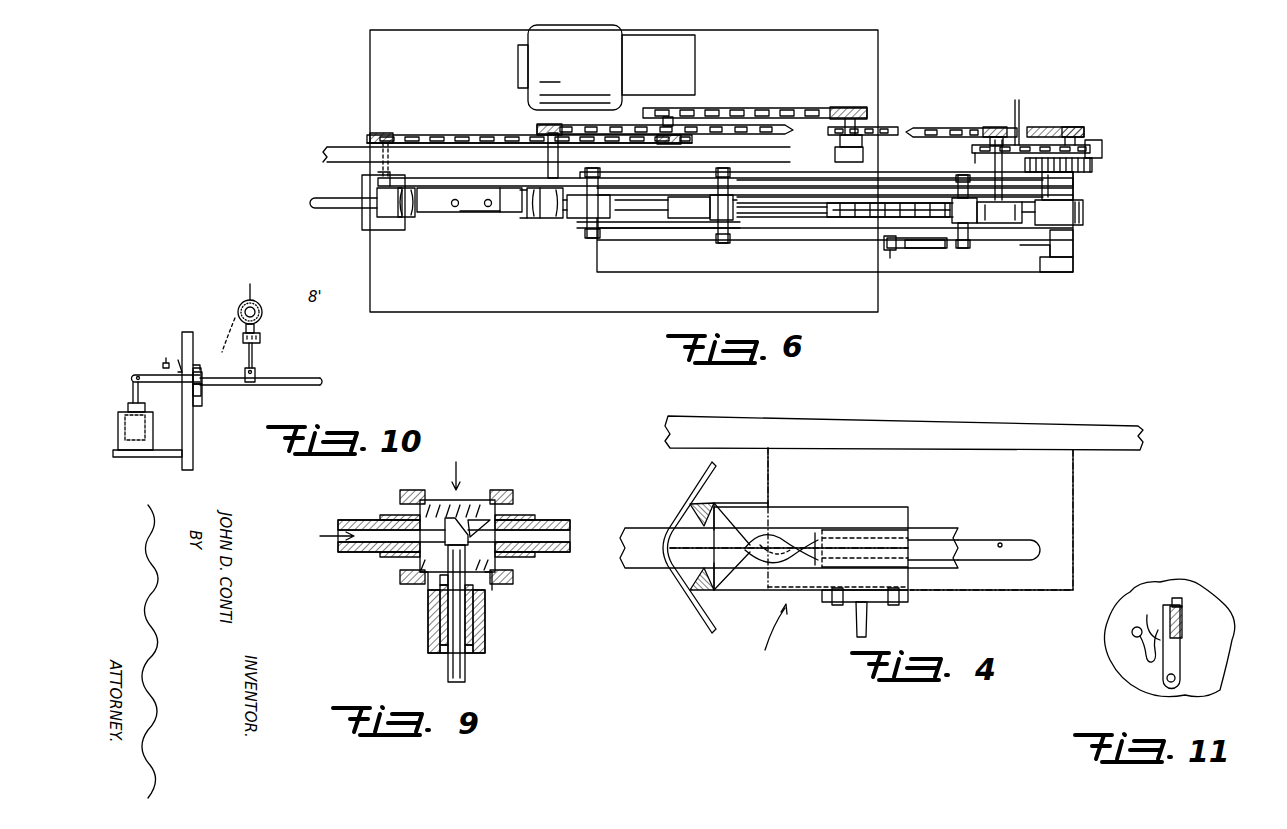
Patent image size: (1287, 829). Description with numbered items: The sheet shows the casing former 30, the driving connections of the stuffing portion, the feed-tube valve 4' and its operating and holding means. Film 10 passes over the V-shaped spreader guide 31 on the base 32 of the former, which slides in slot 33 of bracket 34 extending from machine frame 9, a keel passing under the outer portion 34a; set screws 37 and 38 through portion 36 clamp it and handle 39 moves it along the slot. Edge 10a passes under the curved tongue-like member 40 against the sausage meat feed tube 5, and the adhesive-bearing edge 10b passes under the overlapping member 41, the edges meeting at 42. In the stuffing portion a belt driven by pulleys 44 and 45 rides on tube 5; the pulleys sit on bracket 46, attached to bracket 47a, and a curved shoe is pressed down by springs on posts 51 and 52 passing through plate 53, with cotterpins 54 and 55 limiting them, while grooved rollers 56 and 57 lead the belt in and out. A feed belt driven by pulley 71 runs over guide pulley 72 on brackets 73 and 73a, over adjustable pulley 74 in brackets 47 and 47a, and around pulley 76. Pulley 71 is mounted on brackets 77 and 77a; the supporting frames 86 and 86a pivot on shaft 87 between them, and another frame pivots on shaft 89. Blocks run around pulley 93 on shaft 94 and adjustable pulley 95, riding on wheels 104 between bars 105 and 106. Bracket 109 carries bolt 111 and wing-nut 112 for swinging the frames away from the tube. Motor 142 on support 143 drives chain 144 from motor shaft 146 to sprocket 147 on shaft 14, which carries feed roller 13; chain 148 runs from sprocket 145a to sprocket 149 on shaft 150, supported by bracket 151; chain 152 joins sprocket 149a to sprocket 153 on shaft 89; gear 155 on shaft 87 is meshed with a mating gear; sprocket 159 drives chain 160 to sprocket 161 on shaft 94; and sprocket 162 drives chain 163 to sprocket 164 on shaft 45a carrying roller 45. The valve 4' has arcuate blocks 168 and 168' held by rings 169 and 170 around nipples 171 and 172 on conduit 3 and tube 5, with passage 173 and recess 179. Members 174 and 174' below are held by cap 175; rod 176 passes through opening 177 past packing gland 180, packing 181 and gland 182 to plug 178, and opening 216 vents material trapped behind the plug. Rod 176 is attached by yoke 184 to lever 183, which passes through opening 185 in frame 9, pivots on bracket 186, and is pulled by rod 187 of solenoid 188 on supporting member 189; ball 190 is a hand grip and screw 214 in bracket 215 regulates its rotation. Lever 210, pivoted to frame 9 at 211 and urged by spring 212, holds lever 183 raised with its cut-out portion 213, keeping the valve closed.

In FIG. 6, the support 143 is at (383, 76).
In FIG. 6, the motor 142 is at (585, 76).
In FIG. 6, the chain 144 is at (416, 134).
In FIG. 6, the sprocket 147 is at (386, 132).
In FIG. 6, the machine frame 9 is at (455, 147).
In FIG. 10, the machine frame 9 is at (193, 440).
In FIG. 4, the machine frame 9 is at (928, 442).
In FIG. 11, the machine frame 9 is at (1220, 622).
In FIG. 6, the chain 163 is at (748, 130).
In FIG. 6, the sprocket 164 is at (540, 125).
In FIG. 6, the sprocket 145a is at (690, 128).
In FIG. 6, the motor shaft 146 is at (668, 115).
In FIG. 6, the chain 148 is at (757, 108).
In FIG. 6, the sprocket 149 is at (850, 106).
In FIG. 6, the sprocket 149a is at (835, 127).
In FIG. 6, the chain 152 is at (880, 132).
In FIG. 6, the shaft 150 is at (838, 143).
In FIG. 6, the bracket 151 is at (864, 155).
In FIG. 6, the sprocket 162 is at (990, 127).
In FIG. 6, the chain 160 is at (1017, 140).
In FIG. 6, the sprocket 153 is at (1074, 127).
In FIG. 6, the shaft 89 is at (1075, 145).
In FIG. 6, the sprocket 159 is at (1102, 150).
In FIG. 6, the gear 155 is at (1093, 165).
In FIG. 6, the shaft 94 is at (1000, 158).
In FIG. 6, the sprocket 161 is at (975, 153).
In FIG. 6, the shaft 14 is at (365, 168).
In FIG. 6, the bracket 46 is at (425, 182).
In FIG. 6, the bracket 47a is at (660, 186).
In FIG. 6, the supporting frame 86a is at (745, 190).
In FIG. 6, the supporting frame 86 is at (785, 256).
In FIG. 6, the bar 106 is at (772, 193).
In FIG. 6, the bracket 73a is at (955, 185).
In FIG. 6, the sausage meat feed tube 5 is at (338, 205).
In FIG. 9, the sausage meat feed tube 5 is at (552, 552).
In FIG. 4, the sausage meat feed tube 5 is at (632, 570).
In FIG. 6, the grooved roller 56 is at (372, 216).
In FIG. 6, the sheet material feed roller 13 is at (383, 232).
In FIG. 6, the pulley 44 is at (405, 220).
In FIG. 6, the plate 53 is at (430, 205).
In FIG. 6, the post 51 is at (457, 207).
In FIG. 6, the post 52 is at (491, 207).
In FIG. 6, the cotterpin 54 is at (465, 212).
In FIG. 6, the cotterpin 55 is at (505, 214).
In FIG. 6, the pulley 45 is at (545, 222).
In FIG. 6, the shaft 45a is at (545, 165).
In FIG. 6, the grooved roller 57 is at (523, 222).
In FIG. 6, the pulley 76 is at (575, 226).
In FIG. 6, the pulley 95 is at (675, 210).
In FIG. 6, the bracket 47 is at (680, 240).
In FIG. 6, the pulley 74 is at (728, 230).
In FIG. 6, the bar 105 is at (778, 222).
In FIG. 6, the wheels 104 is at (838, 220).
In FIG. 6, the bolt 111 is at (880, 238).
In FIG. 6, the wing-nut 112 is at (890, 258).
In FIG. 6, the supporting bracket 109 is at (912, 250).
In FIG. 6, the guide pulley 72 is at (965, 220).
In FIG. 6, the bracket 73 is at (958, 248).
In FIG. 6, the pulley 93 is at (1000, 224).
In FIG. 6, the pulley 71 is at (1084, 208).
In FIG. 6, the bracket 77a is at (1075, 178).
In FIG. 6, the bracket 77 is at (1074, 248).
In FIG. 6, the shaft 87 is at (1060, 260).
In FIG. 10, the conduit 3 is at (248, 298).
In FIG. 9, the conduit 3 is at (345, 552).
In FIG. 10, the arcuate block 168' is at (278, 305).
In FIG. 10, the arcuate member 174' is at (279, 323).
In FIG. 10, the cap 175 is at (261, 338).
In FIG. 9, the cap 175 is at (488, 634).
In FIG. 10, the rod 176 is at (253, 358).
In FIG. 9, the rod 176 is at (448, 662).
In FIG. 10, the yoke 184 is at (255, 382).
In FIG. 10, the lever 183 is at (305, 375).
In FIG. 11, the lever 183 is at (1177, 598).
In FIG. 10, the ball 190 is at (325, 383).
In FIG. 10, the bracket 186 is at (170, 385).
In FIG. 10, the rod 187 is at (135, 383).
In FIG. 10, the solenoid 188 is at (128, 452).
In FIG. 10, the supporting member 189 is at (164, 458).
In FIG. 10, the screw 214 is at (163, 362).
In FIG. 10, the bracket 215 is at (180, 360).
In FIG. 10, the arcuate block 168 is at (208, 353).
In FIG. 9, the arcuate block 168 is at (463, 513).
In FIG. 10, the arcuate member 174 is at (229, 343).
In FIG. 9, the arcuate member 174 is at (420, 615).
In FIG. 10, the opening 185 is at (192, 400).
In FIG. 11, the opening 185 is at (1183, 608).
In FIG. 10, the lever 210 is at (202, 382).
In FIG. 11, the lever 210 is at (1180, 666).
In FIG. 10, the spring 212 is at (200, 396).
In FIG. 11, the spring 212 is at (1140, 655).
In FIG. 9, the valve 4' is at (457, 468).
In FIG. 9, the ring 169 is at (412, 490).
In FIG. 9, the ring 170 is at (514, 493).
In FIG. 9, the recess 179 is at (478, 518).
In FIG. 9, the plug 178 is at (435, 540).
In FIG. 9, the sleeve 171 is at (385, 558).
In FIG. 9, the sleeve 172 is at (530, 518).
In FIG. 9, the passage 173 is at (520, 558).
In FIG. 9, the packing gland 180 is at (440, 598).
In FIG. 9, the opening 177 is at (440, 580).
In FIG. 9, the opening 216 is at (478, 580).
In FIG. 9, the packing 181 is at (485, 614).
In FIG. 9, the packing gland 182 is at (470, 652).
In FIG. 4, the bracket 34 is at (1065, 512).
In FIG. 4, the base 32 is at (853, 508).
In FIG. 4, the slot 33 is at (1003, 541).
In FIG. 4, the outer portion 34a is at (928, 585).
In FIG. 4, the sheet 10 is at (685, 520).
In FIG. 4, the edge 10a is at (705, 503).
In FIG. 4, the edge 10b is at (712, 585).
In FIG. 4, the spreader guide 31 is at (704, 610).
In FIG. 4, the tongue-like member 40 is at (750, 535).
In FIG. 4, the tongue-like member 41 is at (760, 545).
In FIG. 4, the overlapping contact 42 is at (812, 530).
In FIG. 4, the set screw 38 is at (835, 606).
In FIG. 4, the set screw 37 is at (896, 606).
In FIG. 4, the portion 36 is at (872, 602).
In FIG. 4, the handle 39 is at (850, 635).
In FIG. 4, the casing former 30 is at (764, 636).
In FIG. 11, the pivot 211 is at (1170, 685).
In FIG. 11, the cut-out portion 213 is at (1147, 615).